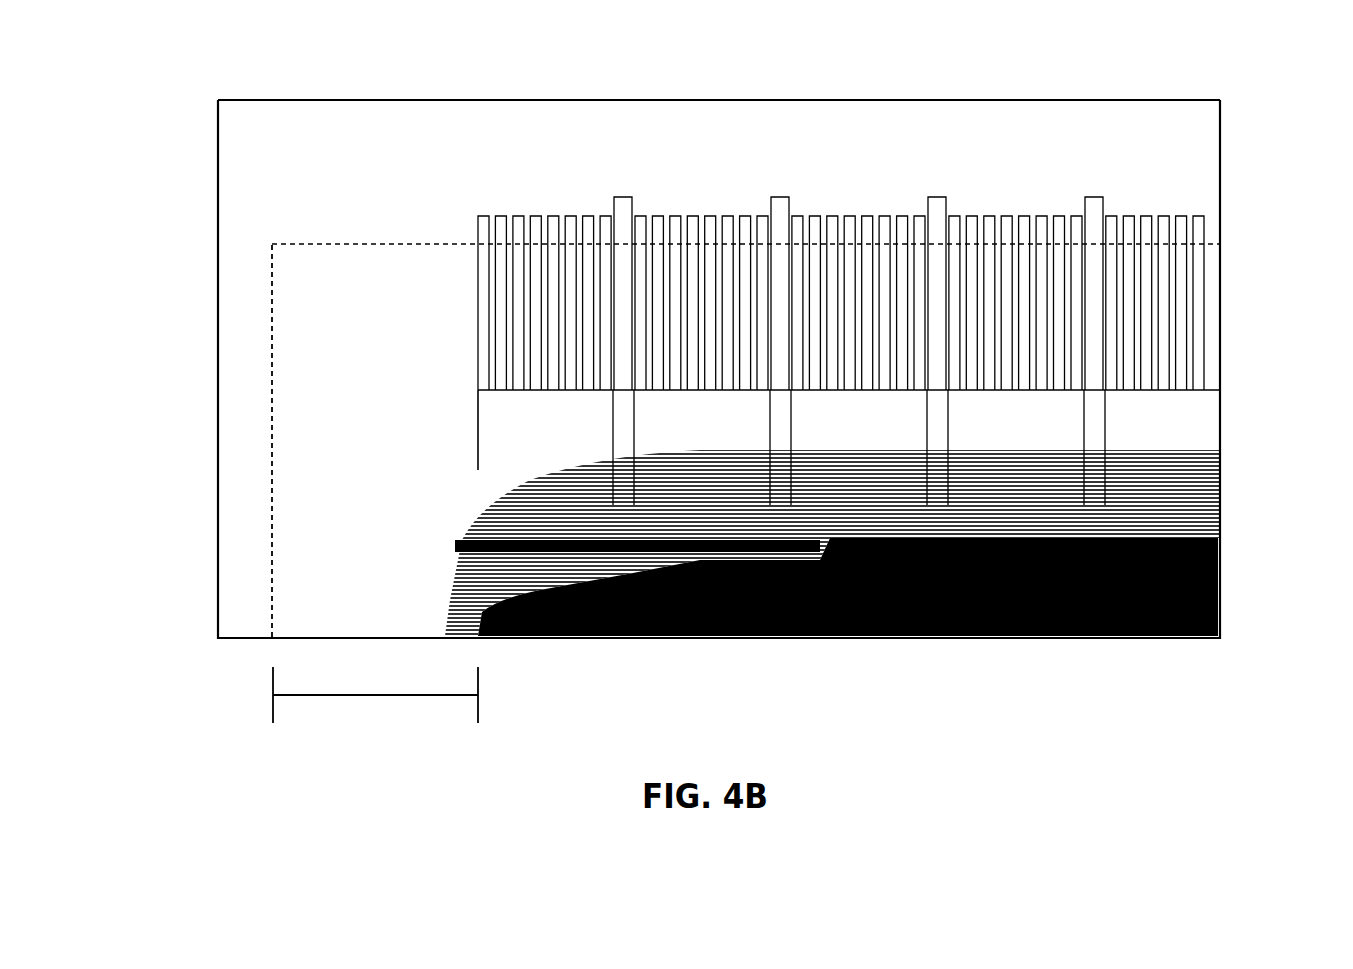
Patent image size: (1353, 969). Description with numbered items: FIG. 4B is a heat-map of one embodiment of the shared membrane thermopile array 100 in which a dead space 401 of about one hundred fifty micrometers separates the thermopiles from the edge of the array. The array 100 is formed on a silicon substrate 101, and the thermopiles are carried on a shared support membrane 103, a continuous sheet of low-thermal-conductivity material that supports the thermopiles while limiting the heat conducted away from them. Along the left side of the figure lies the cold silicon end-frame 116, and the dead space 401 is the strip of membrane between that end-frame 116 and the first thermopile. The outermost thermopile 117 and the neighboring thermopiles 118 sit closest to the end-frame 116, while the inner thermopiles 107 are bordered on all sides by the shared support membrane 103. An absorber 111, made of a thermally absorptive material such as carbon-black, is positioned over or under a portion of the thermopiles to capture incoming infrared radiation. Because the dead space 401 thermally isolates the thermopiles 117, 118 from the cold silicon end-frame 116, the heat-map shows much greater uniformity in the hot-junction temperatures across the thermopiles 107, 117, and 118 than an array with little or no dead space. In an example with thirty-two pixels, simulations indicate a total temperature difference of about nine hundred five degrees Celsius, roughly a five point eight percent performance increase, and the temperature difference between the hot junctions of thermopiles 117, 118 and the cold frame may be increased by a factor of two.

The shared membrane thermopile array 100 is at (218, 305).
The silicon substrate 101 is at (1168, 145).
The shared support membrane 103 is at (1100, 360).
The thermopiles 107 is at (1145, 277).
The absorber 111 is at (547, 427).
The cold silicon end-frame 116 is at (250, 432).
The outermost thermopile 117 is at (547, 230).
The thermopiles 118 is at (1048, 275).
The dead space 401 is at (375, 695).